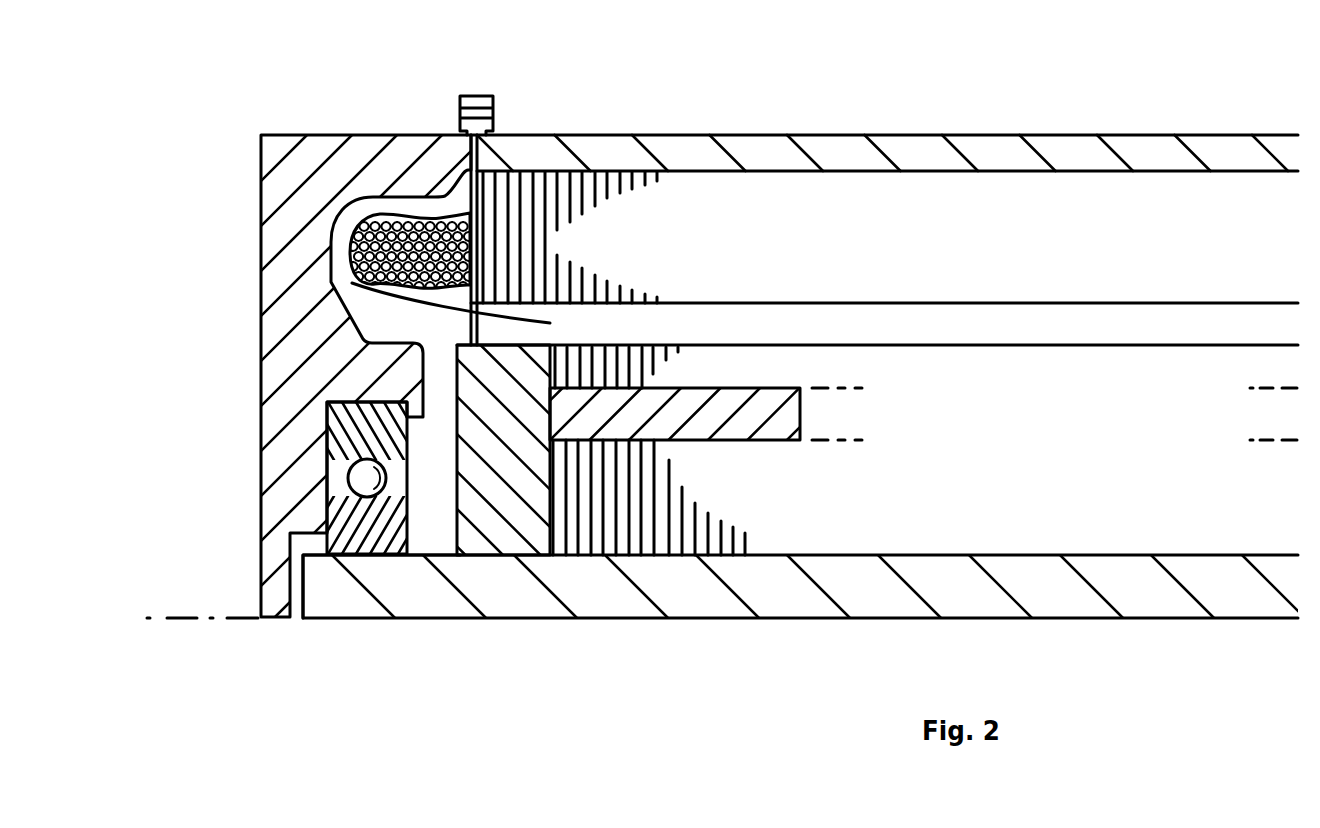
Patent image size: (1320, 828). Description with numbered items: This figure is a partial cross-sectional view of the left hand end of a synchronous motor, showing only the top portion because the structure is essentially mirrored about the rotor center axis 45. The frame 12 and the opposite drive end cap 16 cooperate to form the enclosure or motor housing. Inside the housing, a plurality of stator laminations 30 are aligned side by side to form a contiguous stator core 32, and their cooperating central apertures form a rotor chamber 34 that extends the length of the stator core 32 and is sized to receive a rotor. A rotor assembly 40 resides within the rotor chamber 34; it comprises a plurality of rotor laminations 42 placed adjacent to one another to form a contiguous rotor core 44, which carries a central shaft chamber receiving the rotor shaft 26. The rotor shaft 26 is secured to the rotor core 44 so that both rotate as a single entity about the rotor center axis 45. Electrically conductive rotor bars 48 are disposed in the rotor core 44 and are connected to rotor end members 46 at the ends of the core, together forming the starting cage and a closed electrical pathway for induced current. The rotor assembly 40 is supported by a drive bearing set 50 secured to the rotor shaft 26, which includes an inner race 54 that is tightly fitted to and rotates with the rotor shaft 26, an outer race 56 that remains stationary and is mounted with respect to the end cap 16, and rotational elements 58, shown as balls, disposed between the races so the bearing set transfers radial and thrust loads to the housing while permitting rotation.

The frame 12 is at (667, 132).
The opposite drive end cap 16 is at (287, 133).
The rotor shaft 26 is at (1027, 582).
The stator laminations 30 is at (590, 175).
The stator core 32 is at (1180, 218).
The rotor chamber 34 is at (345, 305).
The rotor assembly 40 is at (1167, 470).
The rotor laminations 42 is at (620, 445).
The rotor core 44 is at (852, 550).
The rotor center axis 45 is at (180, 621).
The rotor end members 46 is at (487, 553).
The rotor bars 48 is at (750, 390).
The drive bearing set 50 is at (325, 500).
The inner race 54 is at (358, 555).
The outer race 56 is at (330, 403).
The rotational elements 58 is at (348, 474).